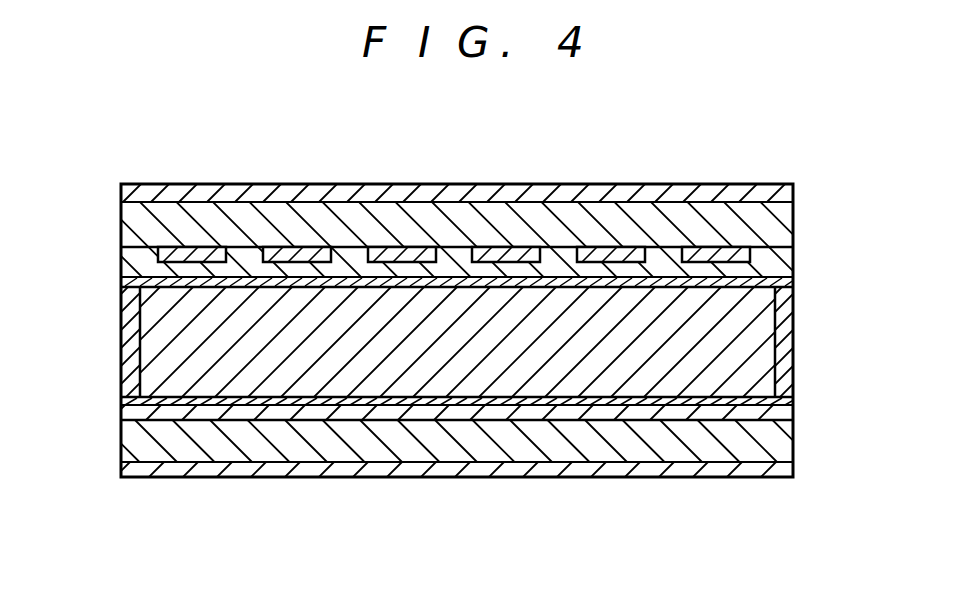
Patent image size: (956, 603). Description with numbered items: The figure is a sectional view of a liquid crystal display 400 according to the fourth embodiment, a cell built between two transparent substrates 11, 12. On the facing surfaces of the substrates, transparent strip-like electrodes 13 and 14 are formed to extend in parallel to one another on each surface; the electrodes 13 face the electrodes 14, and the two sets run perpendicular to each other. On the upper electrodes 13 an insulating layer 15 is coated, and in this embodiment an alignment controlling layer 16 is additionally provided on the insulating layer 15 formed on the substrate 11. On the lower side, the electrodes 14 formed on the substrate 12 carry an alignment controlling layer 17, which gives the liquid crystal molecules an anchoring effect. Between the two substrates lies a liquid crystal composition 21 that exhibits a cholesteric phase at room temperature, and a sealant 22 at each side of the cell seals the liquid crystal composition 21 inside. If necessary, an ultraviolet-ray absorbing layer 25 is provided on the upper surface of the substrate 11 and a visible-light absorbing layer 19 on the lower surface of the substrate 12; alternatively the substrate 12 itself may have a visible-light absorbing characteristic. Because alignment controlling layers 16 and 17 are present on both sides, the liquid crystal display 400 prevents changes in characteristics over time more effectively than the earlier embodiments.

The liquid crystal display 400 is at (765, 135).
The ultraviolet-ray absorbing layer 25 is at (185, 184).
The transparent substrate 11 is at (602, 210).
The insulating layer 15 is at (443, 252).
The transparent strip-like electrodes 13 is at (522, 250).
The alignment controlling layer 16 is at (238, 282).
The liquid crystal composition 21 is at (340, 318).
The sealant 22 is at (121, 320).
The alignment controlling layer 17 is at (363, 405).
The transparent strip-like electrodes 14 is at (462, 415).
The transparent substrate 12 is at (567, 452).
The visible-light absorbing layer 19 is at (218, 477).